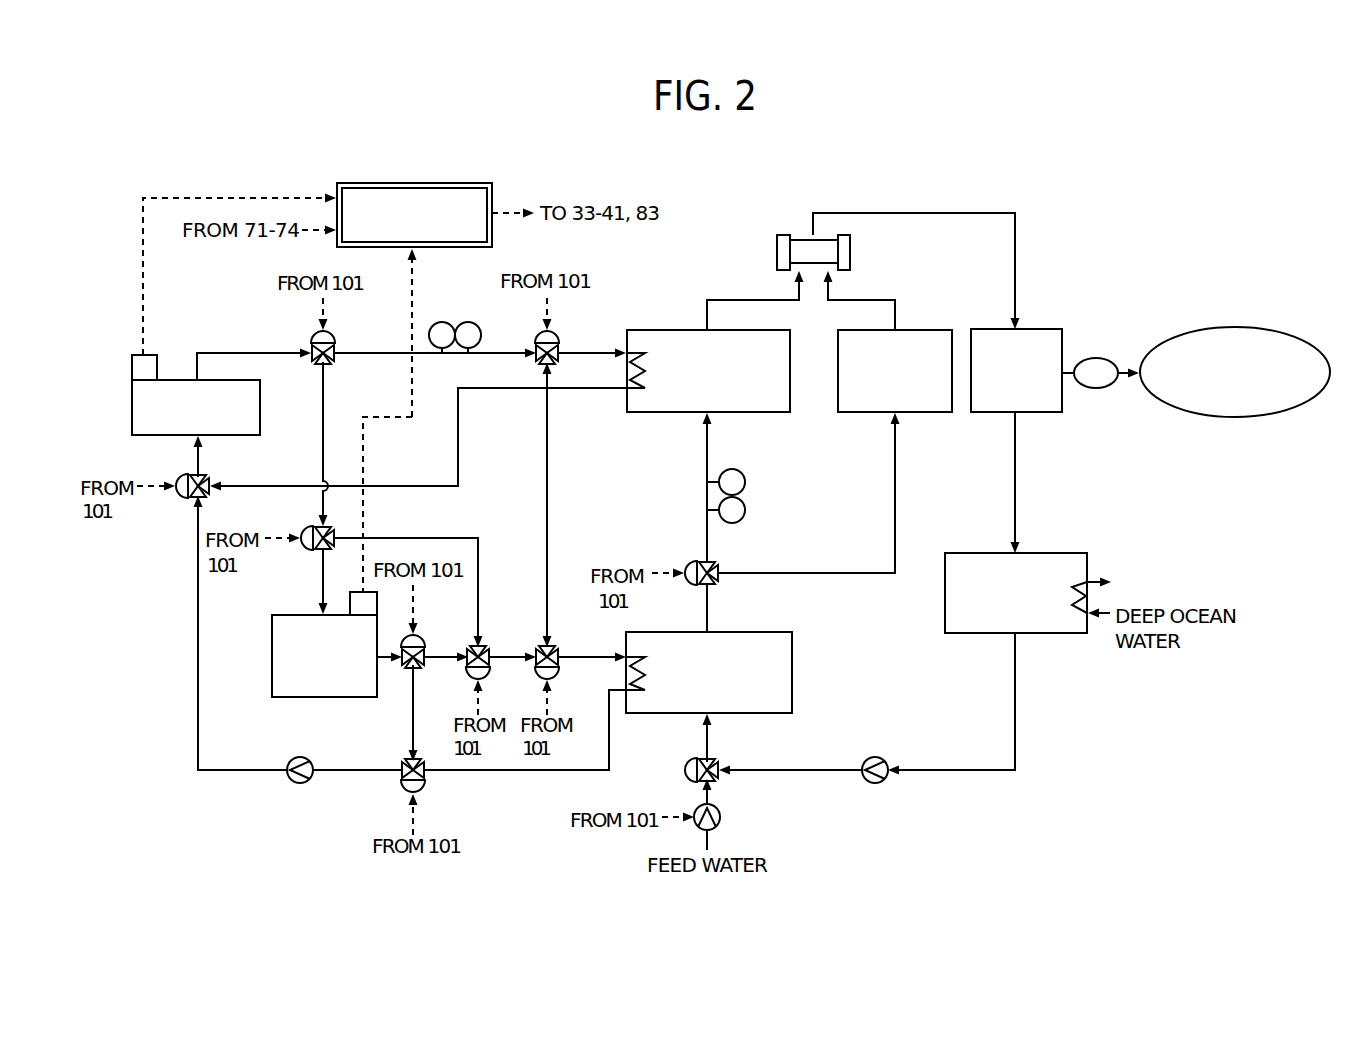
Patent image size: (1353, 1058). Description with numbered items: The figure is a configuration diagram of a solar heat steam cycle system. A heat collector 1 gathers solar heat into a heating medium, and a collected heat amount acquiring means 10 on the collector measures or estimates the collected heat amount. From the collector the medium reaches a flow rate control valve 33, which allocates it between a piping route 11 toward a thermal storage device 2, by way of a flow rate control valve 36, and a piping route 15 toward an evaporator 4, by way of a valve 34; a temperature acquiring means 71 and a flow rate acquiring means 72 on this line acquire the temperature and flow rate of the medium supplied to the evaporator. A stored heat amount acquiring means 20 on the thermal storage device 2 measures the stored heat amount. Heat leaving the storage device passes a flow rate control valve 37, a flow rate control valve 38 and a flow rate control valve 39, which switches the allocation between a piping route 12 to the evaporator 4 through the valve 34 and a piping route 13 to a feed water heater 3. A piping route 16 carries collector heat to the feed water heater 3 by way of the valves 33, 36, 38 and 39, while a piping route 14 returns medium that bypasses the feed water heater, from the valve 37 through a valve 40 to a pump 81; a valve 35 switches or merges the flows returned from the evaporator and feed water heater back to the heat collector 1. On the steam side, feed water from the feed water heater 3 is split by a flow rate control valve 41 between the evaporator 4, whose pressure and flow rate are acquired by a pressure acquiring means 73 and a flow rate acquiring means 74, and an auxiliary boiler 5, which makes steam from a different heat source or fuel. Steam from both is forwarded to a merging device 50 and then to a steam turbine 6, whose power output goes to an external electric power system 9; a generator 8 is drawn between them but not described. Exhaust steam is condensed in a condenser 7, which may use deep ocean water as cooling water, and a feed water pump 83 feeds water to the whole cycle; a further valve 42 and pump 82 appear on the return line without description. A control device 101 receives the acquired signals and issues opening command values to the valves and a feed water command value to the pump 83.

The heat collector 1 is at (132, 412).
The thermal storage device 2 is at (345, 699).
The feed water heater 3 is at (793, 675).
The evaporator 4 is at (762, 413).
The auxiliary boiler 5 is at (866, 413).
The steam turbine 6 is at (991, 414).
The condenser 7 is at (1060, 553).
The generator 8 is at (1096, 358).
The electric power system 9 is at (1237, 328).
The collected heat amount acquiring means 10 is at (132, 370).
The piping route 11 is at (323, 455).
The piping route 12 is at (546, 518).
The piping route 13 is at (577, 652).
The piping route 14 is at (412, 720).
The piping route 15 is at (432, 358).
The piping route 16 is at (429, 537).
The stored heat amount acquiring means 20 is at (357, 590).
The flow rate control valve 33 is at (312, 335).
The valve 34 is at (535, 335).
The valve 35 is at (178, 499).
The flow rate control valve 36 is at (305, 552).
The flow rate control valve 37 is at (422, 637).
The flow rate control valve 38 is at (466, 672).
The flow rate control valve 39 is at (536, 672).
The valve 40 is at (403, 785).
The flow rate control valve 41 is at (686, 561).
The three-way valve 42 is at (688, 758).
The merging device 50 is at (851, 253).
The temperature acquiring means 71 is at (441, 321).
The flow rate acquiring means 72 is at (470, 321).
The pressure acquiring means 73 is at (745, 482).
The flow rate acquiring means 74 is at (745, 510).
The pump 81 is at (300, 757).
The pump 82 is at (874, 757).
The feed water pump 83 is at (720, 817).
The control device 101 is at (437, 183).